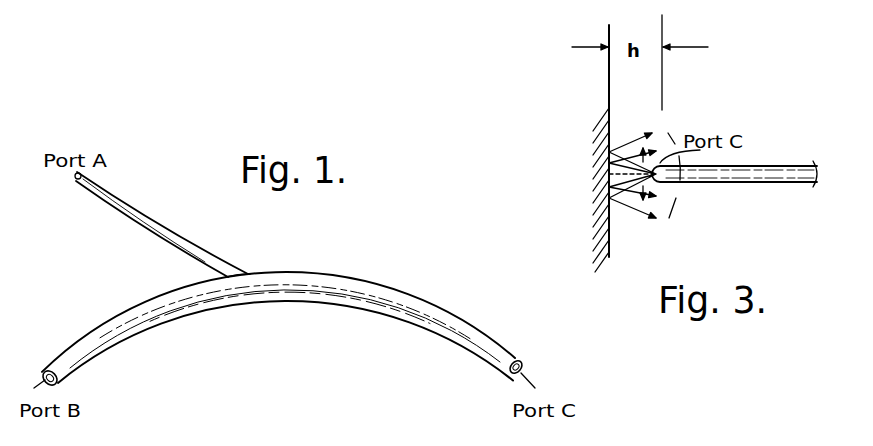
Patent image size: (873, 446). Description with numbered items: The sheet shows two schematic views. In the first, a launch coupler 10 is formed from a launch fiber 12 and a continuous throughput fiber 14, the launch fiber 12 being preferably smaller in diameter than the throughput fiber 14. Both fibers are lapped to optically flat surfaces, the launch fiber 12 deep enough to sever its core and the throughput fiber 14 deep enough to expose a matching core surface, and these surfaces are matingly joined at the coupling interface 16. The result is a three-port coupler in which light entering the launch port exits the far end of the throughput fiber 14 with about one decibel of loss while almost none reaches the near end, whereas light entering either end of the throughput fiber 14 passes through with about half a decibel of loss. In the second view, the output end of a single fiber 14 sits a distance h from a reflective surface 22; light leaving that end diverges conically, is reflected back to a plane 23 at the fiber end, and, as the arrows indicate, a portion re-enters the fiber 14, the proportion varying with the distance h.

In FIG. 1, the launch coupler 10 is at (403, 275).
In FIG. 1, the launch fiber 12 is at (92, 200).
In FIG. 1, the throughput fiber 14 is at (92, 360).
In FIG. 3, the throughput fiber 14 is at (778, 183).
In FIG. 1, the coupling interface 16 is at (280, 273).
In FIG. 3, the reflective surface 22 is at (610, 124).
In FIG. 3, the plane 23 is at (660, 128).